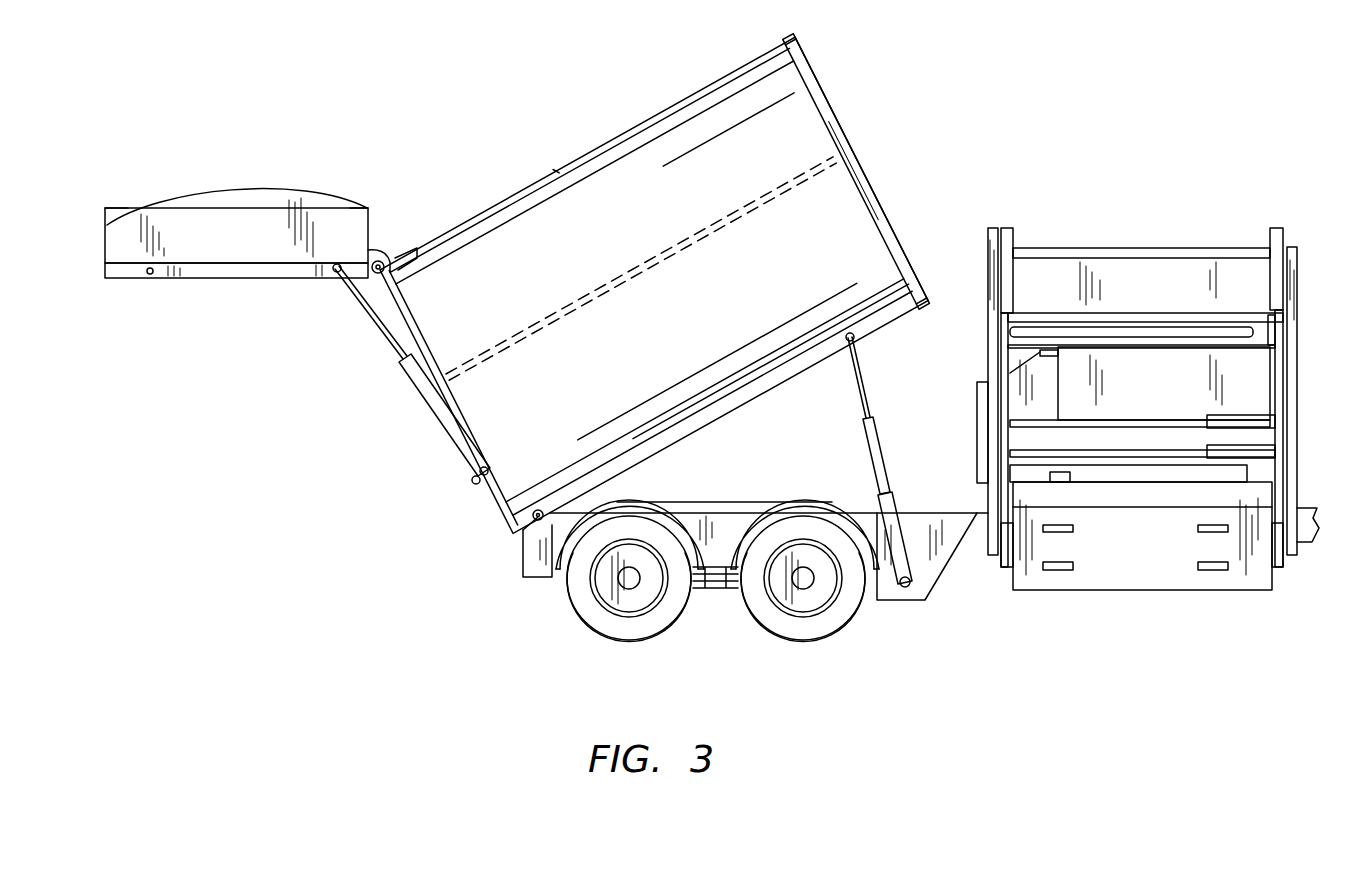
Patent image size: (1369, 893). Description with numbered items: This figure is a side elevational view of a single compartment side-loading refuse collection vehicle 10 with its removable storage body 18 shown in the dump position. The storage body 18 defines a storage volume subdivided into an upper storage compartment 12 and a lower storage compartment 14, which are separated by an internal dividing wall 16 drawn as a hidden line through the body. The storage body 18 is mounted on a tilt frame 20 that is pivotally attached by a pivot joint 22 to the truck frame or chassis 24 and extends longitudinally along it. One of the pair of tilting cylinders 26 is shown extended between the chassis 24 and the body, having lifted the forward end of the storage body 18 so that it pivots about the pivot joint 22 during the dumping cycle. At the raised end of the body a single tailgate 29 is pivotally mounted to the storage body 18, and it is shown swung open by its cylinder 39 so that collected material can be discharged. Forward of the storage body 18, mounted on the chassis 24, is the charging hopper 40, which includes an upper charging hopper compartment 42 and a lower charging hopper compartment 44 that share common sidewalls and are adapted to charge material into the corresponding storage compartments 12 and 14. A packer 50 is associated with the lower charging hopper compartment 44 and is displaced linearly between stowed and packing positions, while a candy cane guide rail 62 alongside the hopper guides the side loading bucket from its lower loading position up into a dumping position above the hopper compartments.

The collection vehicle 10 is at (1067, 148).
The upper storage compartment 12 is at (666, 228).
The lower storage compartment 14 is at (723, 330).
The internal dividing wall 16 is at (498, 340).
The storage body 18 is at (577, 183).
The tilt frame 20 is at (893, 318).
The pivot joint 22 is at (530, 527).
The truck frame or chassis 24 is at (974, 548).
The tilting cylinder 26 is at (893, 498).
The tailgate 29 is at (255, 197).
The cylinder 39 is at (430, 407).
The charging hopper 40 is at (1170, 245).
The upper charging hopper compartment 42 is at (1076, 283).
The lower charging hopper compartment 44 is at (1158, 408).
The packer 50 is at (977, 423).
The candy cane guide rail 62 is at (1272, 322).